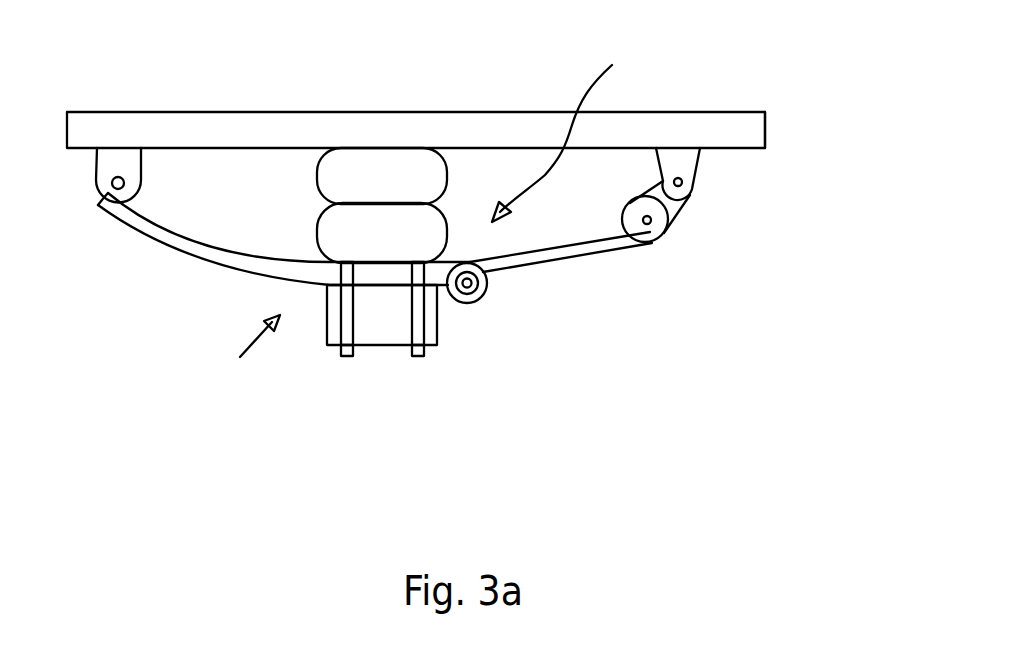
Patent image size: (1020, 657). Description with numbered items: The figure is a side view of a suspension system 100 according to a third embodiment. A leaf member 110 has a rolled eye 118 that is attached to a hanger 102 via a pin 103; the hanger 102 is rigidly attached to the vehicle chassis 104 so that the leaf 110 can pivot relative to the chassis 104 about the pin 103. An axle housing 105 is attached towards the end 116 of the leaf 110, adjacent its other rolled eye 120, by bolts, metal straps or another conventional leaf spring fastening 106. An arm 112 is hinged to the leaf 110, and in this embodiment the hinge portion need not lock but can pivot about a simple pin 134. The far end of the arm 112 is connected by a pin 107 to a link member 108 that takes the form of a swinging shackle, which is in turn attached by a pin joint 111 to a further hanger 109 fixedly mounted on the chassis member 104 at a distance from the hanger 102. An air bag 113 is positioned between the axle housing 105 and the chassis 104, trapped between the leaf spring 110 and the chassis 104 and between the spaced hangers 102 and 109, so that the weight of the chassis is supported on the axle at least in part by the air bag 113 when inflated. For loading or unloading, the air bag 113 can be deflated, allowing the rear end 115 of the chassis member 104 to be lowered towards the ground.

The suspension system 100 is at (240, 364).
The hanger 102 is at (130, 158).
The pin 103 is at (117, 178).
The vehicle chassis 104 is at (450, 126).
The axle housing 105 is at (388, 325).
The leaf spring fastening 106 is at (328, 348).
The pin 107 is at (651, 240).
The link member 108 is at (660, 206).
The hanger 109 is at (688, 162).
The leaf member 110 is at (206, 256).
The pin joint 111 is at (683, 182).
The arm 112 is at (573, 250).
The air bag 113 is at (362, 170).
The rear end 115 is at (767, 130).
The end 116 is at (564, 115).
The rolled eye 118 is at (110, 202).
The rolled eye 120 is at (483, 292).
The pin 134 is at (466, 292).